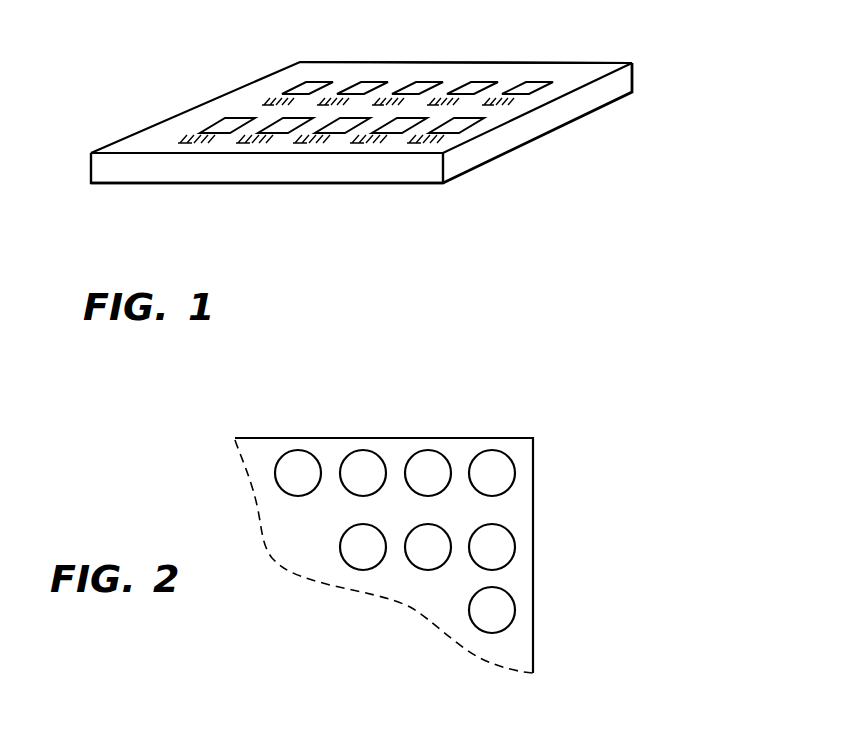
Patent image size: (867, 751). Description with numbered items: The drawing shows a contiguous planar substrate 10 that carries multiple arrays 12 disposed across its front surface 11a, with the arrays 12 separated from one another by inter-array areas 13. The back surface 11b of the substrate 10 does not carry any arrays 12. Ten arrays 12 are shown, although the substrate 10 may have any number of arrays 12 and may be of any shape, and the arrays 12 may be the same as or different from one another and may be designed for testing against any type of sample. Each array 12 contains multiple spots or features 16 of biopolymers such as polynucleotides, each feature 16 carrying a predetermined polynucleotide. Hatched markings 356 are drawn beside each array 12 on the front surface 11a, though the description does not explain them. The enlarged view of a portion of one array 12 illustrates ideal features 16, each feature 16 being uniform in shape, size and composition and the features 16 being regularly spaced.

In FIG. 1, the substrate 10 is at (543, 125).
In FIG. 1, the front surface 11a is at (587, 70).
In FIG. 1, the back surface 11b is at (120, 185).
In FIG. 1, the arrays 12 is at (217, 125).
In FIG. 2, the arrays 12 is at (520, 643).
In FIG. 1, the inter-array areas 13 is at (398, 132).
In FIG. 1, the contact pads 356 is at (268, 100).
In FIG. 2, the features 16 is at (448, 492).